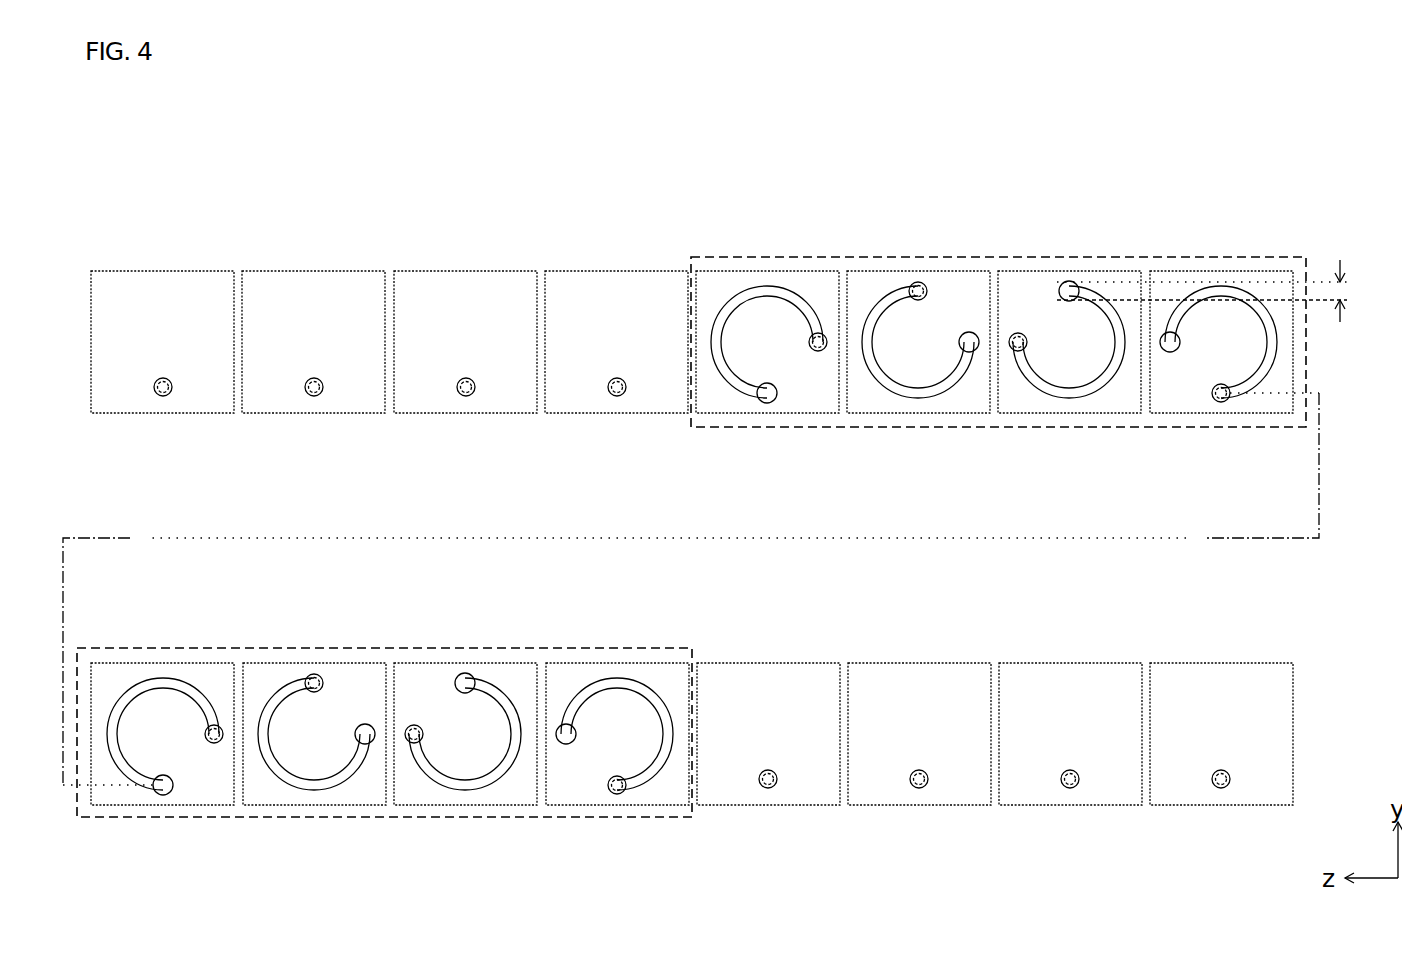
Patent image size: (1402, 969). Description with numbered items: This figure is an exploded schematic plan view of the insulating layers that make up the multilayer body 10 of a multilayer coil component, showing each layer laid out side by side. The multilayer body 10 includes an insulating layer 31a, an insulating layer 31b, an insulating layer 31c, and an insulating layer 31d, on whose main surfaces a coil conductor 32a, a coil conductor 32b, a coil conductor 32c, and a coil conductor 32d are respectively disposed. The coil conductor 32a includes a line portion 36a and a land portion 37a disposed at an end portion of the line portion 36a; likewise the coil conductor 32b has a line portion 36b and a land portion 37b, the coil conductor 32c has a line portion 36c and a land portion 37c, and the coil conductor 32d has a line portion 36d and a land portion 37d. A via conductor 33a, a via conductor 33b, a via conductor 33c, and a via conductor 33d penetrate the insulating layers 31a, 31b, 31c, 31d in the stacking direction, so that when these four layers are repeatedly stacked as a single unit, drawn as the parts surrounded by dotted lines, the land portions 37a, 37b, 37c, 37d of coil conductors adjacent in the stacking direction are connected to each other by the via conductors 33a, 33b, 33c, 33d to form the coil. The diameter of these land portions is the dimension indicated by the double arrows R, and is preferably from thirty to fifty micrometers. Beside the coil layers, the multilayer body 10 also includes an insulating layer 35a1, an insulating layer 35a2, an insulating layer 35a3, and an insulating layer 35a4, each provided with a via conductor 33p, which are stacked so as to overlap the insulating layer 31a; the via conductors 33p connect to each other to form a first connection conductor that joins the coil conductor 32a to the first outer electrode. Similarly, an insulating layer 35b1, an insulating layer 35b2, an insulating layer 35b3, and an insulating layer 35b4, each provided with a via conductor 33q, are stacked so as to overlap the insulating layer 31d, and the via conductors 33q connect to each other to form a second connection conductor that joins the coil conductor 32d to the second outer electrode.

The multilayer body 10 is at (222, 195).
The insulating layer 31a is at (728, 284).
The insulating layer 31b is at (880, 284).
The insulating layer 31c is at (1030, 284).
The insulating layer 31d is at (1183, 284).
The coil conductor 32a is at (460, 520).
The coil conductor 32b is at (611, 595).
The coil conductor 32c is at (773, 595).
The coil conductor 32d is at (924, 482).
The via conductor 33a is at (818, 333).
The via conductor 33b is at (918, 282).
The via conductor 33c is at (1015, 352).
The via conductor 33d is at (1228, 400).
The via conductor 33p is at (161, 397).
The via conductor 33q is at (766, 789).
The insulating layer 35a1 is at (133, 284).
The insulating layer 35a2 is at (284, 284).
The insulating layer 35a3 is at (436, 284).
The insulating layer 35a4 is at (587, 284).
The insulating layer 35b1 is at (1192, 676).
The insulating layer 35b2 is at (1041, 676).
The insulating layer 35b3 is at (890, 676).
The insulating layer 35b4 is at (739, 676).
The line portion 36a is at (738, 388).
The line portion 36b is at (890, 395).
The line portion 36c is at (1090, 388).
The line portion 36d is at (1243, 296).
The land portion 37a is at (818, 352).
The land portion 37b is at (968, 333).
The land portion 37c is at (1022, 332).
The land portion 37d is at (1168, 352).
The diameter of the land portions R is at (1212, 291).